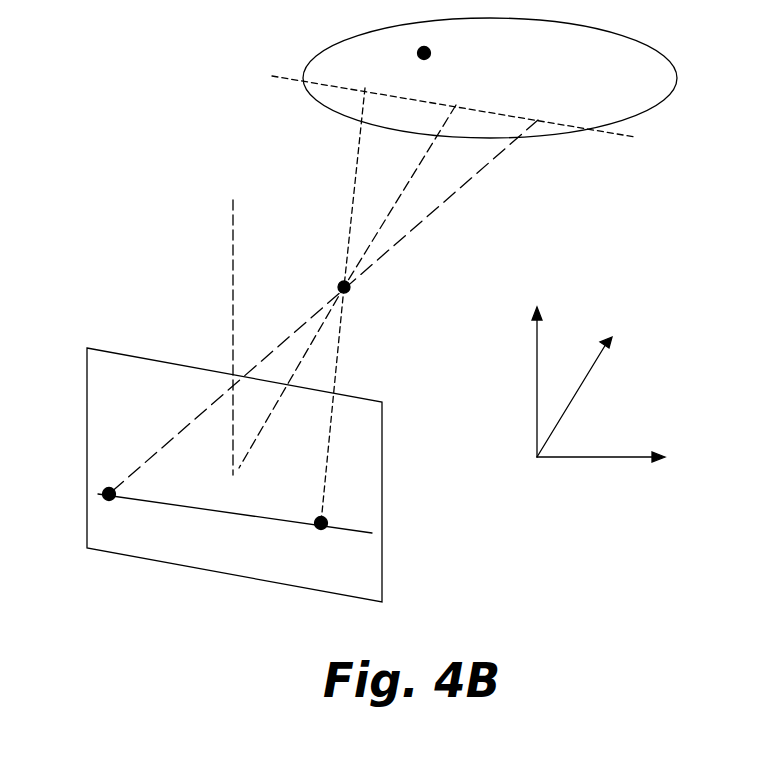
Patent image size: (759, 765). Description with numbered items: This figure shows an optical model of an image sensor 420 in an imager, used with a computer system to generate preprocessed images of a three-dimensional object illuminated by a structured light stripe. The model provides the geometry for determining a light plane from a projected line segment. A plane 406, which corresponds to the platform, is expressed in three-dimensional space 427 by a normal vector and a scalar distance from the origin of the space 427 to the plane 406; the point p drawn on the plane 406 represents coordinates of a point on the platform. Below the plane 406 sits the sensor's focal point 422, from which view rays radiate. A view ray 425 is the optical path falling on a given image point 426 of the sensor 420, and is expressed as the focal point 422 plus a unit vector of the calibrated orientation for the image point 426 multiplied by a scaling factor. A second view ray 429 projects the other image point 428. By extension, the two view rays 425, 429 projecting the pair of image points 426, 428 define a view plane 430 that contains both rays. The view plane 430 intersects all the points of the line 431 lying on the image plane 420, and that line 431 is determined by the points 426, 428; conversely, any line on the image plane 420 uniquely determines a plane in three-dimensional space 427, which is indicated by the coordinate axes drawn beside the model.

The plane 406 is at (660, 75).
The image sensor 420 is at (234, 475).
The focal point 422 is at (367, 297).
The view ray 425 is at (510, 143).
The image point 426 is at (120, 510).
The 3D space 427 is at (595, 277).
The image point 428 is at (325, 539).
The view ray 429 is at (355, 163).
The view plane 430 is at (410, 206).
The line 431 is at (213, 512).